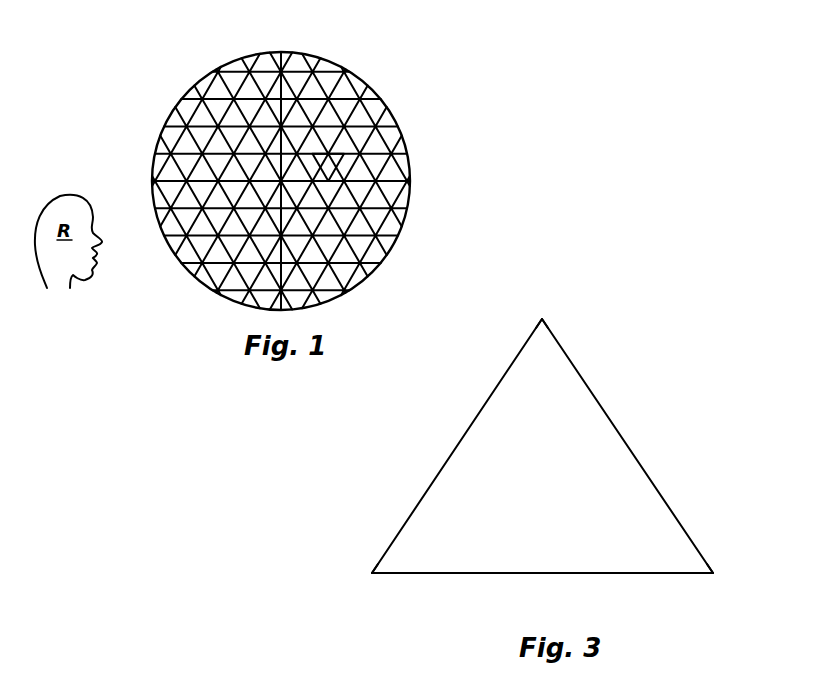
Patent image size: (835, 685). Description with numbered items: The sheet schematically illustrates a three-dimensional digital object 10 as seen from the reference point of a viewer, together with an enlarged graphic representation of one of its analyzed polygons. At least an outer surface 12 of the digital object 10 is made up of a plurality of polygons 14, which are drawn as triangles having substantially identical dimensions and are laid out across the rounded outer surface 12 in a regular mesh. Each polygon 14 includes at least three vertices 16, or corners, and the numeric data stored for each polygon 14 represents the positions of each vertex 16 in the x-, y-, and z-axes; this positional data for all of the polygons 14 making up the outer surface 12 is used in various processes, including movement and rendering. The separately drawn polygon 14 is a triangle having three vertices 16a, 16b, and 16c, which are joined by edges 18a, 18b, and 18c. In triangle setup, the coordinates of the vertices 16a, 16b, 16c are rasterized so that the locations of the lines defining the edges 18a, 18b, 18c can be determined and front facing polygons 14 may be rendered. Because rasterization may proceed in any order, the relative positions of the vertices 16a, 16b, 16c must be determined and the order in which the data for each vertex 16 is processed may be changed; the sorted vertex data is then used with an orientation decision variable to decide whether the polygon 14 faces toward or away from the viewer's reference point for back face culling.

In FIG. 1, the three-dimensional digital object 10 is at (267, 157).
In FIG. 1, the outer surface 12 is at (387, 101).
In FIG. 1, the polygon 14 is at (327, 247).
In FIG. 3, the polygon 14 is at (520, 450).
In FIG. 1, the vertices 16 is at (312, 53).
In FIG. 3, the first vertex 16a is at (545, 318).
In FIG. 3, the second vertex 16b is at (370, 572).
In FIG. 3, the third vertex 16c is at (713, 575).
In FIG. 3, the first edge 18a is at (467, 427).
In FIG. 3, the second edge 18b is at (445, 574).
In FIG. 3, the third edge 18c is at (610, 413).